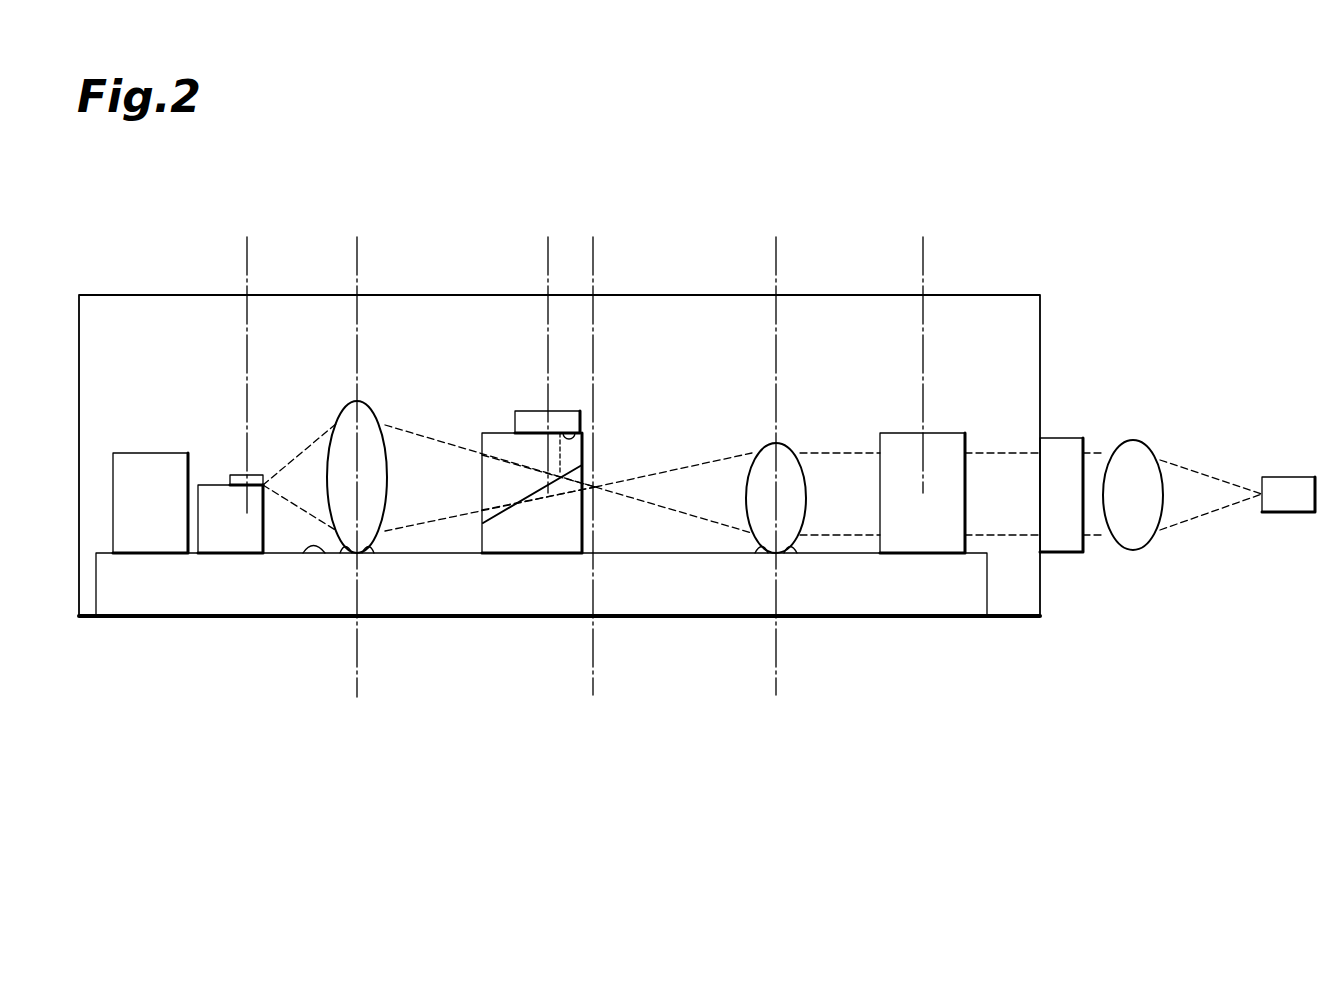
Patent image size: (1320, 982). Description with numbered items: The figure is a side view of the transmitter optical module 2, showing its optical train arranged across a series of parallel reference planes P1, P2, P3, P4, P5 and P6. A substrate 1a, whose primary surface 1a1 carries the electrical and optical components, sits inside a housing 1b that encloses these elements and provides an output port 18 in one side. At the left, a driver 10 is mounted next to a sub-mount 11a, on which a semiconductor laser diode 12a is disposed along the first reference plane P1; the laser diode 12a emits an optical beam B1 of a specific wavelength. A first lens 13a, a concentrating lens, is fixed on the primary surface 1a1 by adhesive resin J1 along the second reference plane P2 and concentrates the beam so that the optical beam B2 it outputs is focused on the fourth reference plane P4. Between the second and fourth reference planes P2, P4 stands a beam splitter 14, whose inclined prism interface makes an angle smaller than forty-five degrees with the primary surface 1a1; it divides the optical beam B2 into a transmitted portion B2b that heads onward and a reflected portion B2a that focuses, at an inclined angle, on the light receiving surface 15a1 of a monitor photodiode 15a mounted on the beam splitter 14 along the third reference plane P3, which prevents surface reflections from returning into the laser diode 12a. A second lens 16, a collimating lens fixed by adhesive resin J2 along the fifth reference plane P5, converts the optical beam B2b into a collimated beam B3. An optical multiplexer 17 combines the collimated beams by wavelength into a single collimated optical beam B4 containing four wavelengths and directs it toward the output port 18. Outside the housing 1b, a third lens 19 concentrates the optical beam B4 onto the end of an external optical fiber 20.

The transmitter optical module 2 is at (1095, 250).
The substrate 1a is at (283, 607).
The primary surface 1a1 is at (318, 555).
The housing 1b is at (105, 294).
The driver 10 is at (152, 453).
The sub-mount 11a is at (207, 537).
The semiconductor laser diode 12a is at (250, 473).
The first lens 13a is at (359, 402).
The beam splitter 14 is at (488, 433).
The monitor photodiode 15a is at (522, 411).
The light receiving surface 15a1 is at (575, 433).
The second lens 16 is at (786, 447).
The optical multiplexer 17 is at (953, 433).
The output port 18 is at (1068, 438).
The third lens 19 is at (1134, 439).
The external optical fiber 20 is at (1290, 477).
The first reference plane P1 is at (247, 240).
The second reference plane P2 is at (357, 240).
The third reference plane P3 is at (548, 240).
The fourth reference plane P4 is at (593, 240).
The fifth reference plane P5 is at (777, 240).
The sixth reference plane P6 is at (923, 240).
The optical beam B1 is at (292, 502).
The optical beam B2 is at (430, 522).
The optical beam B2a is at (537, 438).
The optical beam B2b is at (692, 462).
The collimated beam B3 is at (845, 540).
The single optical beam B4 is at (1010, 540).
The adhesive resin J1 is at (345, 555).
The adhesive resin J2 is at (760, 555).